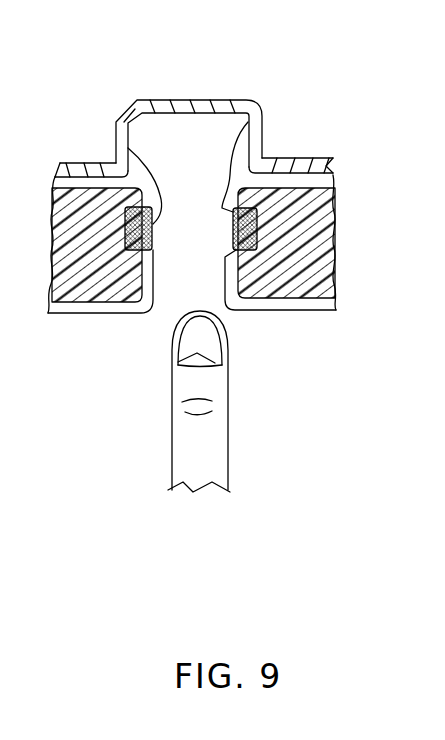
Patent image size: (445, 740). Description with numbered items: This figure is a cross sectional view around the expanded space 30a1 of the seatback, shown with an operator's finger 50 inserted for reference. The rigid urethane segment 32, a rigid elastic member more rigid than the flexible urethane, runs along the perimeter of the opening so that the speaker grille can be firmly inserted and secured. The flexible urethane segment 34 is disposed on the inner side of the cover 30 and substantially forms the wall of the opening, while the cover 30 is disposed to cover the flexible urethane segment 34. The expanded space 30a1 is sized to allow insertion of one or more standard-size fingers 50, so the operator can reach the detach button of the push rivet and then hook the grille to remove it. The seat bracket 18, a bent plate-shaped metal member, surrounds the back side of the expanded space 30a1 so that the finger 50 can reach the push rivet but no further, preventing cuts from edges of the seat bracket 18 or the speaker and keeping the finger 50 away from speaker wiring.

The seat bracket 18 is at (297, 160).
The rigid urethane segment 32 is at (117, 140).
The flexible urethane segment 34 is at (78, 317).
The cover 30 is at (112, 317).
The expanded space 30a1 is at (216, 201).
The finger 50 is at (228, 462).